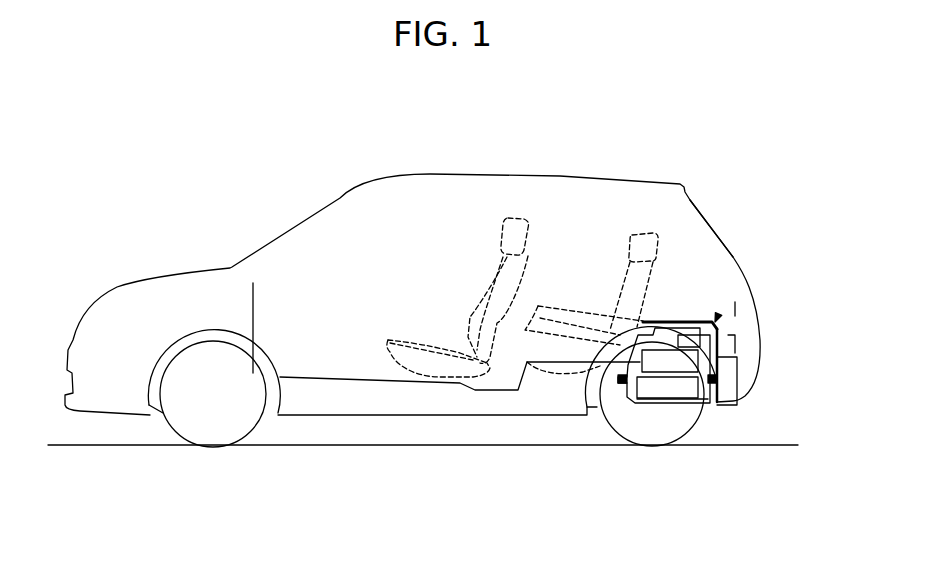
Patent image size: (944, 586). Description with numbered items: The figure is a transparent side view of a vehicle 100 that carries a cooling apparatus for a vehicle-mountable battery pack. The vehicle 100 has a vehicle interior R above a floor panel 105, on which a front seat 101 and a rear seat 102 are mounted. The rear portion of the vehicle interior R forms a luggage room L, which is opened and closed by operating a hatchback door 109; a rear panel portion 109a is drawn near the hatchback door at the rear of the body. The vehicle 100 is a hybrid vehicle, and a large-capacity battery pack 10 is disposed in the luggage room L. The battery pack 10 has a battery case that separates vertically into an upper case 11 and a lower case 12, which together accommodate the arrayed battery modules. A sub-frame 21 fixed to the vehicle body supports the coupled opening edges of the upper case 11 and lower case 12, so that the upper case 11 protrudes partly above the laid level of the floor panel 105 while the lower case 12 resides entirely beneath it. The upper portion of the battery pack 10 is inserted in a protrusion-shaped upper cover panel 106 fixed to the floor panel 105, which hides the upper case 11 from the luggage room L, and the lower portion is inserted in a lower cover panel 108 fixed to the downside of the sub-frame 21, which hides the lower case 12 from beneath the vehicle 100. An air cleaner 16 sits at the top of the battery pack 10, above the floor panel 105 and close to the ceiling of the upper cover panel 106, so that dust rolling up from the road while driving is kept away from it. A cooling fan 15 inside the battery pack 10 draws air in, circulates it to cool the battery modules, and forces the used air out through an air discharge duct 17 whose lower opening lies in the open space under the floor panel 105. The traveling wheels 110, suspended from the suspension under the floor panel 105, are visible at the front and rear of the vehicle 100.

The vehicle 100 is at (330, 150).
The vehicle interior R is at (463, 194).
The front seat 101 is at (510, 217).
The rear seat 102 is at (650, 232).
The floor panel 105 is at (380, 388).
The upper cover panel 106 is at (700, 321).
The lower cover panel 108 is at (683, 404).
The hatchback door 109 is at (693, 208).
The rear panel inner portion 109a is at (738, 352).
The traveling wheels 110 is at (690, 435).
The battery pack 10 is at (737, 307).
The upper case 11 is at (723, 340).
The lower case 12 is at (639, 406).
The cooling fan 15 is at (716, 320).
The air cleaner 16 is at (674, 334).
The air discharge duct 17 is at (722, 366).
The sub-frame 21 is at (613, 403).
The luggage room L is at (719, 285).